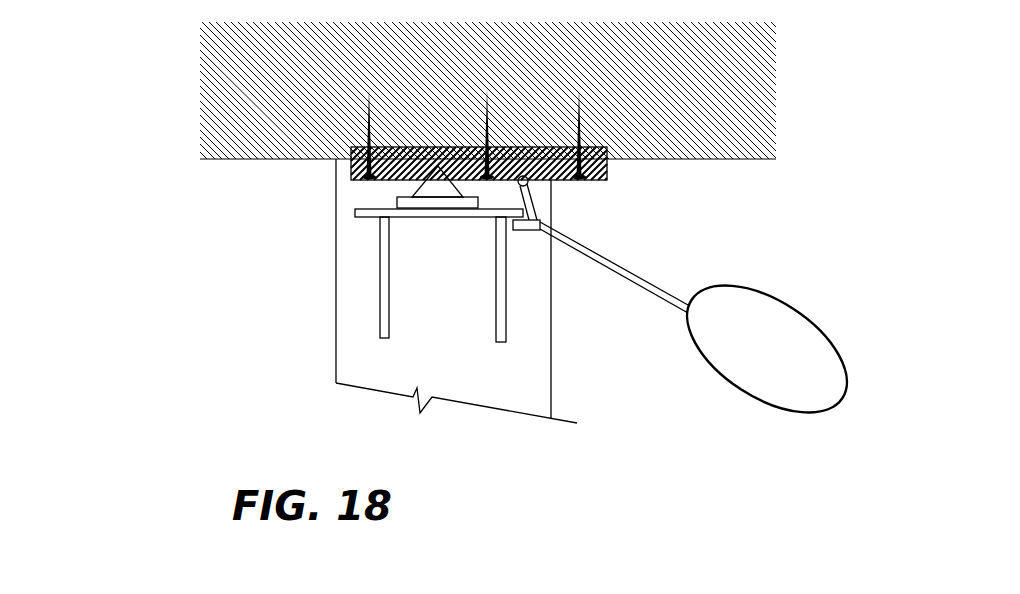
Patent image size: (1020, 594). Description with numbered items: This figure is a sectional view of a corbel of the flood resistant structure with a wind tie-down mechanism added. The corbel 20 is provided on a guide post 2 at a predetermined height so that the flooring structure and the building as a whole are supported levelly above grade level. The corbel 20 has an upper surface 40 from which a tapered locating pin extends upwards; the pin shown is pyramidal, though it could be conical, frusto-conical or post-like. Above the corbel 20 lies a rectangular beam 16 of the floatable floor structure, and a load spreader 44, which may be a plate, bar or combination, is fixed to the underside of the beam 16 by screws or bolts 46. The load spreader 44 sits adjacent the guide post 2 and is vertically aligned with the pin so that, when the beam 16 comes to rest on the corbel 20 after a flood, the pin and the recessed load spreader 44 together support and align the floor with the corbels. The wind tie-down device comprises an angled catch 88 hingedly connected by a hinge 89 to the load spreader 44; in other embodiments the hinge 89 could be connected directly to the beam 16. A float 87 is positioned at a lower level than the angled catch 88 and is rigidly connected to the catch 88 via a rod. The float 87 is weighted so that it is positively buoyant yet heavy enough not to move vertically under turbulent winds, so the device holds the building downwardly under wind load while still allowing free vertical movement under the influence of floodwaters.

The guide post 2 is at (333, 368).
The beam 16 is at (185, 85).
The corbel 20 is at (300, 340).
The upper surface 40 is at (358, 218).
The load spreader 44 is at (347, 182).
The screws 46 is at (362, 123).
The float 87 is at (795, 417).
The angled catch 88 is at (535, 233).
The hinge 89 is at (537, 184).